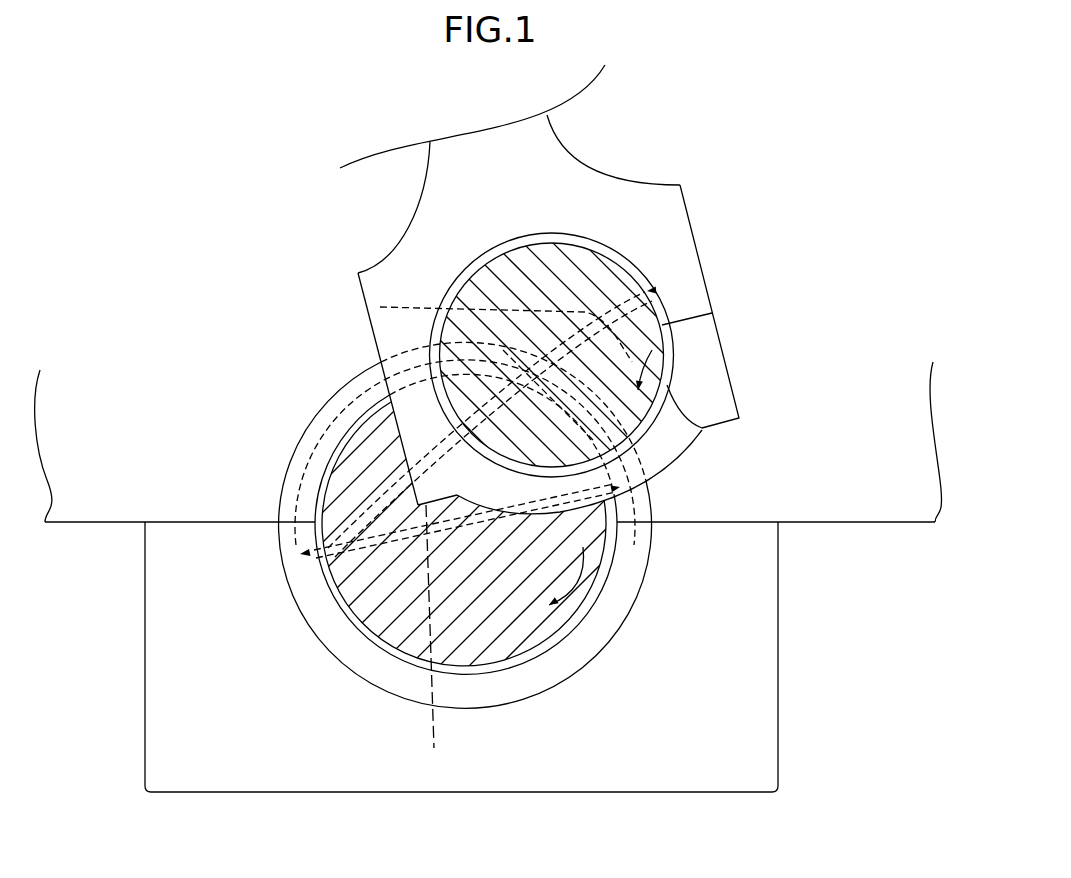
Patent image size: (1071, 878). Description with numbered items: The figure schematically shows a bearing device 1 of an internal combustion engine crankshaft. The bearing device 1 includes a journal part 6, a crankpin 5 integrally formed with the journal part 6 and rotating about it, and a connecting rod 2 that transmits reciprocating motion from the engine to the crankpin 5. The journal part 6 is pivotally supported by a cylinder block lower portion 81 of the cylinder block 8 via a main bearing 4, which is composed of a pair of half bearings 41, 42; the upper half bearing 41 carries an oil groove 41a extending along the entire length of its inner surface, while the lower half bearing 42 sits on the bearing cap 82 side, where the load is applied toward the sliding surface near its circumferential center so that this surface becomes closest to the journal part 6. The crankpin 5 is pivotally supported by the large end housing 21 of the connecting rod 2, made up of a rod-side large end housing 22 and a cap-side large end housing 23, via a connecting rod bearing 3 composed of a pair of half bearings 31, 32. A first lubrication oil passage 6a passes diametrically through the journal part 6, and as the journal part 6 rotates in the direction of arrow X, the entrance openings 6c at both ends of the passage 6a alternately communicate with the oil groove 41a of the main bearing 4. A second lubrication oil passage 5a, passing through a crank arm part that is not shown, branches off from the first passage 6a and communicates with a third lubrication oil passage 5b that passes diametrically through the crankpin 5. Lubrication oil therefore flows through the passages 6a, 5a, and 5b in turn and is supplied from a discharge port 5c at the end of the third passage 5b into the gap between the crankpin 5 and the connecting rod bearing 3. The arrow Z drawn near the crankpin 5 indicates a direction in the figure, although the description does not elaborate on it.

The bearing device 1 is at (147, 202).
The connecting rod 2 is at (435, 177).
The large end housing 21 is at (707, 207).
The rod-side large end housing 22 is at (702, 263).
The cap-side large end housing 23 is at (723, 353).
The connecting rod bearing 3 is at (682, 375).
The half bearing 31 is at (502, 248).
The half bearing 32 is at (656, 434).
The main bearing 4 is at (370, 525).
The half bearing 41 is at (290, 458).
The oil groove 41a is at (307, 500).
The half bearing 42 is at (297, 588).
The crankpin 5 is at (578, 270).
The second lubrication oil passage 5a is at (330, 415).
The third lubrication oil passage 5b is at (380, 307).
The discharge port 5c is at (648, 290).
The journal part 6 is at (377, 625).
The lubrication oil passage 6a is at (429, 642).
The entrance openings 6c is at (308, 557).
The cylinder block 8 is at (488, 577).
The cylinder block lower portion 81 is at (836, 526).
The bearing cap 82 is at (780, 706).
The rotation direction Z is at (650, 433).
The arrow X is at (570, 585).